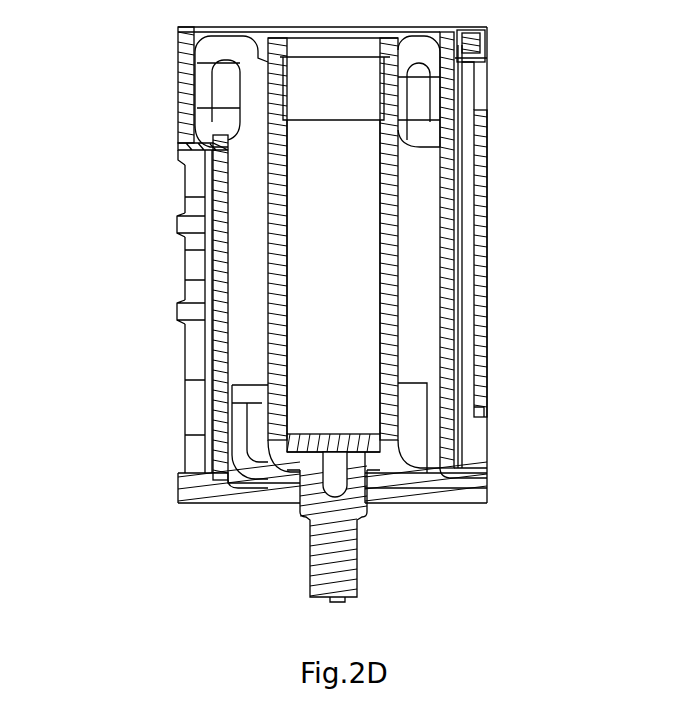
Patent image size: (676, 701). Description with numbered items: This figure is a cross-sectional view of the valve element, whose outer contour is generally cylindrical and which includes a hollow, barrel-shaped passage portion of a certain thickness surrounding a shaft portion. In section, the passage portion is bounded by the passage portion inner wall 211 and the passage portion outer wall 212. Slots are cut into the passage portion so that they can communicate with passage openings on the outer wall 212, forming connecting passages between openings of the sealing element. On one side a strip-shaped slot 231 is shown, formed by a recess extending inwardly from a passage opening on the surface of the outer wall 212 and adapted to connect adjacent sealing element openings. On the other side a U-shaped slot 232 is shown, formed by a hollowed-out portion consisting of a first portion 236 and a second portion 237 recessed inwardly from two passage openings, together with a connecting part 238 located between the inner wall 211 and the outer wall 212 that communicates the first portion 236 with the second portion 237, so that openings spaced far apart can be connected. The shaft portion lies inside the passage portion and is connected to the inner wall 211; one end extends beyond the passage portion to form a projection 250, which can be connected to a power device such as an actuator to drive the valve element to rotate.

The passage portion outer wall 212 is at (178, 107).
The passage portion inner wall 211 is at (178, 228).
The strip-shaped slot 231 is at (200, 392).
The second portion 237 is at (467, 96).
The connecting part 238 is at (465, 213).
The U-shaped slot 232 is at (462, 288).
The first portion 236 is at (470, 445).
The projection 250 is at (335, 565).